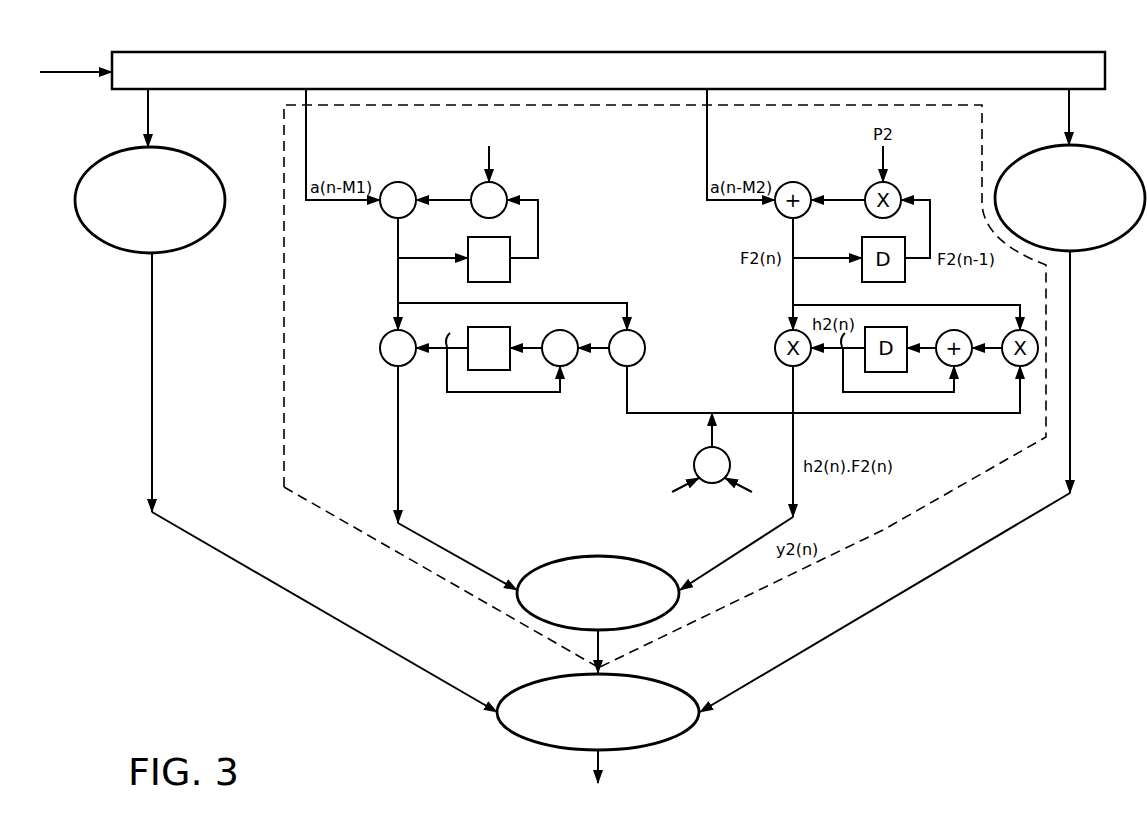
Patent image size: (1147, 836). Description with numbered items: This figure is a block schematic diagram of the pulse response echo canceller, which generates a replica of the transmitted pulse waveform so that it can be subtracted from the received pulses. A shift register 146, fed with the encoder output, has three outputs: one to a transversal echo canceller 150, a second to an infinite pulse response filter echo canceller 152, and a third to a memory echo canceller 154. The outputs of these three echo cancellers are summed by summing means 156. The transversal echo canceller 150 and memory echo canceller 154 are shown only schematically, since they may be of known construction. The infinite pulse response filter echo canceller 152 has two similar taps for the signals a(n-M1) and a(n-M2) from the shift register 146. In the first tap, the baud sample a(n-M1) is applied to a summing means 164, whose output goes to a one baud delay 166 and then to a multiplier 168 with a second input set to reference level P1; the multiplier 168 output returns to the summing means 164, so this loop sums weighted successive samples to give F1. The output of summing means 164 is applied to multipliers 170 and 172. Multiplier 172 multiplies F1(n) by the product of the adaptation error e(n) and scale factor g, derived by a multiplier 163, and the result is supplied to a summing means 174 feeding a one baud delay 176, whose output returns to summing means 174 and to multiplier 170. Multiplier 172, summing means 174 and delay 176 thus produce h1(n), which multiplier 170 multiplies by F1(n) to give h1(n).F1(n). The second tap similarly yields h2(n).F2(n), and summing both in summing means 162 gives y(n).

The shift register 146 is at (414, 50).
The transversal echo canceller 150 is at (106, 157).
The infinite pulse response filter echo canceller 152 is at (284, 381).
The memory echo canceller 154 is at (1108, 153).
The summing means 156 is at (556, 675).
The summing means 162 is at (571, 557).
The multiplier 163 is at (700, 452).
The summing means 164 is at (412, 183).
The one baud delay 166 is at (468, 239).
The multiplier 168 is at (486, 171).
The multiplier 170 is at (385, 338).
The multiplier 172 is at (640, 333).
The summing means 174 is at (562, 368).
The one baud delay 176 is at (510, 328).